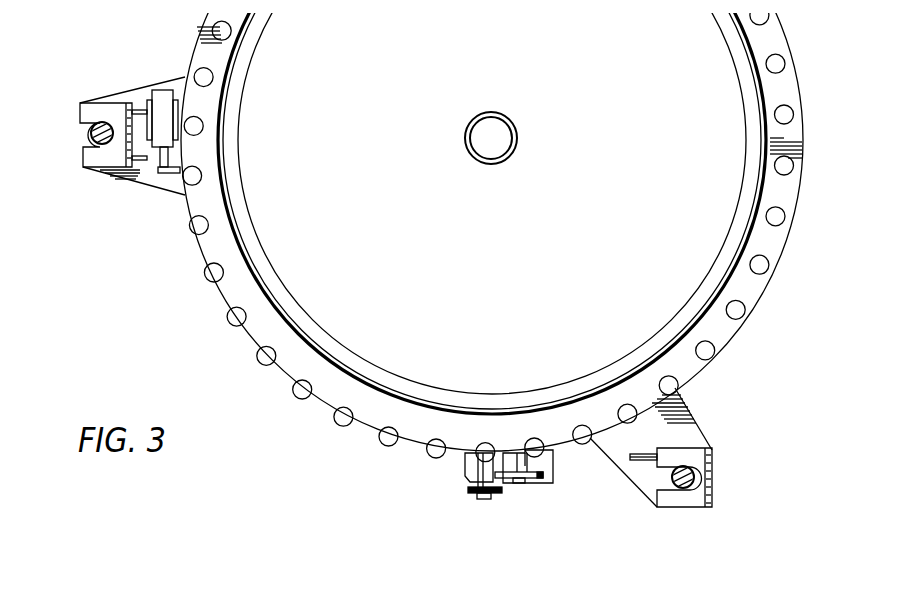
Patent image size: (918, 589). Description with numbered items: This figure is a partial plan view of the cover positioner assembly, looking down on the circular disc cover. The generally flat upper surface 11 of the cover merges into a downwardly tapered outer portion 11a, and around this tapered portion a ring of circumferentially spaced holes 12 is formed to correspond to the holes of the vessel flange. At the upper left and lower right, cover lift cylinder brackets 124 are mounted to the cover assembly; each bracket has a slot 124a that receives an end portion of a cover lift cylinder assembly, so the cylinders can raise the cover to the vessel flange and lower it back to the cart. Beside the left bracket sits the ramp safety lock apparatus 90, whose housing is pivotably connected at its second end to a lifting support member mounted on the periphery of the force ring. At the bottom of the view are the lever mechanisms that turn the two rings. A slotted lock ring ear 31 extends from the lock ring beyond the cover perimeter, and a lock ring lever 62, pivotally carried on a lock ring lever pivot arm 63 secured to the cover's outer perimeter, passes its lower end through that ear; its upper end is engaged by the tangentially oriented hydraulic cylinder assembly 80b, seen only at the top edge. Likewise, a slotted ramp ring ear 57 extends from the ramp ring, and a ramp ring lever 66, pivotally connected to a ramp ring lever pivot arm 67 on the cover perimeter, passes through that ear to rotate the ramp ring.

The upper surface 11 is at (334, 136).
The downwardly tapered outer portion 11a is at (752, 299).
The circumferentially spaced holes 12 is at (781, 64).
The hydraulic cylinder assembly 80b is at (428, 4).
The cover lift cylinder bracket 124 is at (127, 93).
The slot 124a is at (88, 132).
The ramp safety lock apparatus 90 is at (162, 80).
The slotted lock ring ear 31 is at (465, 459).
The lock ring lever pivot arm 63 is at (481, 455).
The lock ring lever 62 is at (468, 491).
The slotted ramp ring ear 57 is at (553, 462).
The ramp ring lever pivot arm 67 is at (521, 456).
The ramp ring lever 66 is at (498, 482).